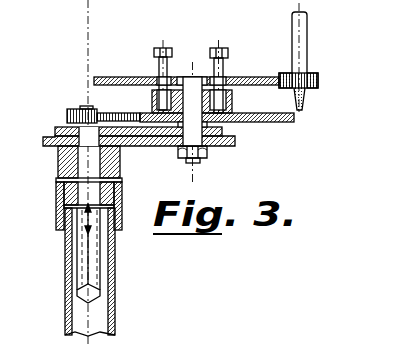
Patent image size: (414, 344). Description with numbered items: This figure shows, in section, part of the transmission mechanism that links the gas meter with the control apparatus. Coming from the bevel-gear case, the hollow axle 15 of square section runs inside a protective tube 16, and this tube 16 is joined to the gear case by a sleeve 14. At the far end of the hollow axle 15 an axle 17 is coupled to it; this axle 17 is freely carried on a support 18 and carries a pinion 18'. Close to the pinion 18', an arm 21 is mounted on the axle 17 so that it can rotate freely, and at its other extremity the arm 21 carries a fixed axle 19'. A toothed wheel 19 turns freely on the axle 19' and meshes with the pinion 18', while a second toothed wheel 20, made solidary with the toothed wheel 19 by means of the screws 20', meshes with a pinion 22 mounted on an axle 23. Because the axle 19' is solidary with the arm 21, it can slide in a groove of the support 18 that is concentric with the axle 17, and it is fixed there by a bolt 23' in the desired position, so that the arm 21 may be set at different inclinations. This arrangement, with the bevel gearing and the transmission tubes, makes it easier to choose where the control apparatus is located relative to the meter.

The sleeve 14 is at (58, 202).
The hollow axle 15 is at (83, 252).
The tube 16 is at (118, 296).
The axle 17 is at (87, 152).
The support 18 is at (155, 138).
The pinion 18' is at (83, 110).
The toothed wheel 19 is at (217, 108).
The fixed axle 19' is at (182, 129).
The toothed wheel 20 is at (186, 69).
The screws 20' is at (191, 70).
The arm 21 is at (55, 127).
The pinion 22 is at (320, 80).
The axle 23 is at (312, 42).
The bolt 23' is at (206, 160).